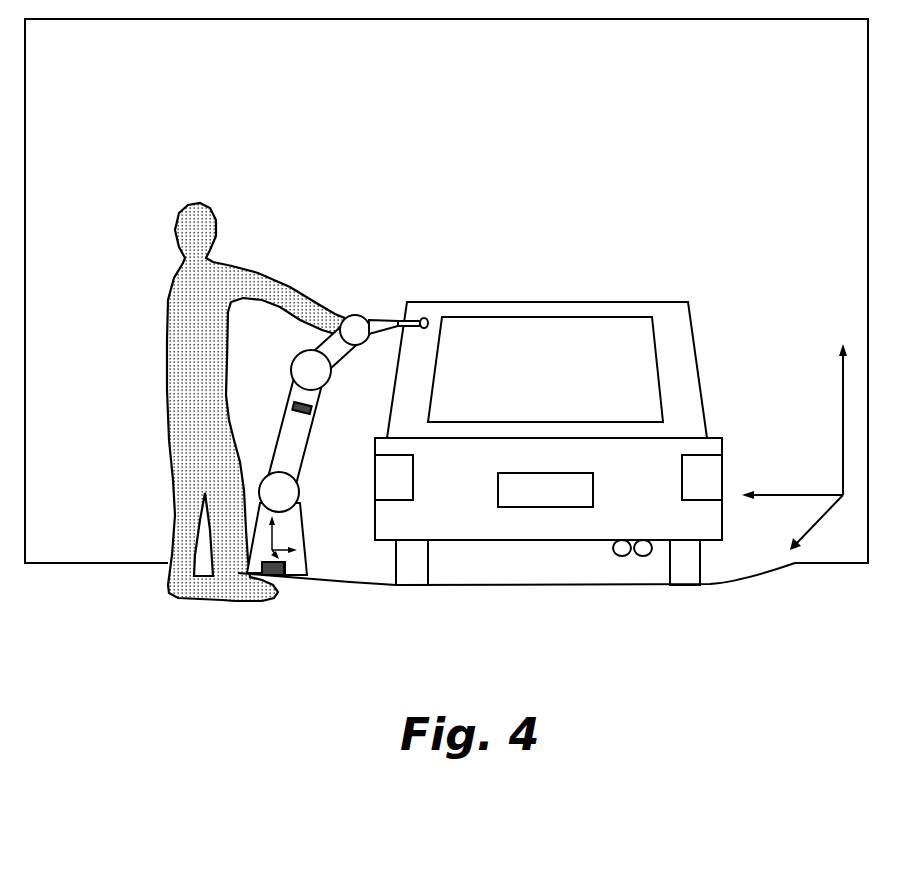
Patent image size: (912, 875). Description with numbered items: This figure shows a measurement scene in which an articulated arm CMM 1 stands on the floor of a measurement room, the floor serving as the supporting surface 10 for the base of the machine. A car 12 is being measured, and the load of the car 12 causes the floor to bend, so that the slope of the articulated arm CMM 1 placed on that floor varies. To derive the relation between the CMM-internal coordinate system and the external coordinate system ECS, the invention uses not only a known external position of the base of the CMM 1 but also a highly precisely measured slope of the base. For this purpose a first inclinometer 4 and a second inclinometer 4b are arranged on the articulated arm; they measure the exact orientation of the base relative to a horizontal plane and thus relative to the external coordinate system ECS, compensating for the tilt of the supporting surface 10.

The articulated arm CMM 1 is at (297, 412).
The first inclinometer 4 is at (337, 486).
The second inclinometer 4b is at (295, 431).
The supporting surface 10 is at (315, 568).
The car 12 is at (548, 420).
The external coordinate system ECS is at (784, 447).